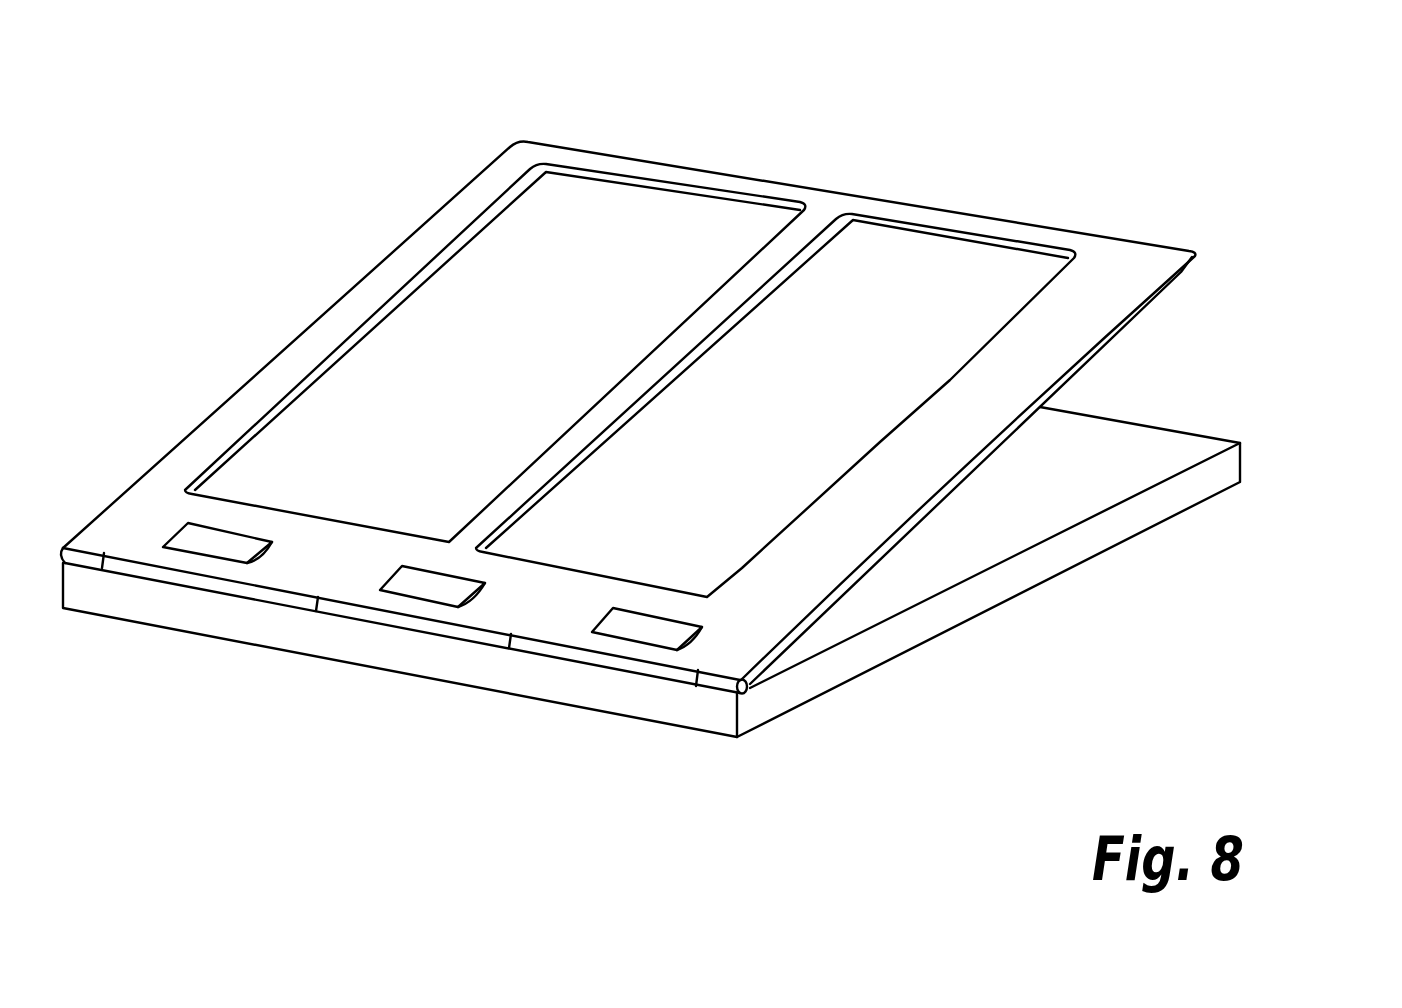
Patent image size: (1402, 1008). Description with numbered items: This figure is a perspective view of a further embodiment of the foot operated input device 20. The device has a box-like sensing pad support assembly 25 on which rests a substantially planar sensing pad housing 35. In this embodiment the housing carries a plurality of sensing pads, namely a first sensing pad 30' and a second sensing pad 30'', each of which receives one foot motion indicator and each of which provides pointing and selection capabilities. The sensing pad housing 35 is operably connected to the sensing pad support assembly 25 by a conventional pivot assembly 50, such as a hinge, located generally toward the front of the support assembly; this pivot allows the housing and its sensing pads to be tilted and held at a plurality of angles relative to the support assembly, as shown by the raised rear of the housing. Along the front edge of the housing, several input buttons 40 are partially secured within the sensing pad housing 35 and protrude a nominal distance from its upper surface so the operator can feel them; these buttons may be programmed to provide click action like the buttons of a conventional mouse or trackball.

The foot operated input device 20 is at (330, 175).
The sensing pad support assembly 25 is at (1240, 472).
The sensing pad housing 35 is at (1128, 260).
The sensing pad 30' is at (775, 363).
The sensing pad 30'' is at (495, 311).
The input buttons 40 is at (225, 542).
The pivot assembly 50 is at (722, 683).